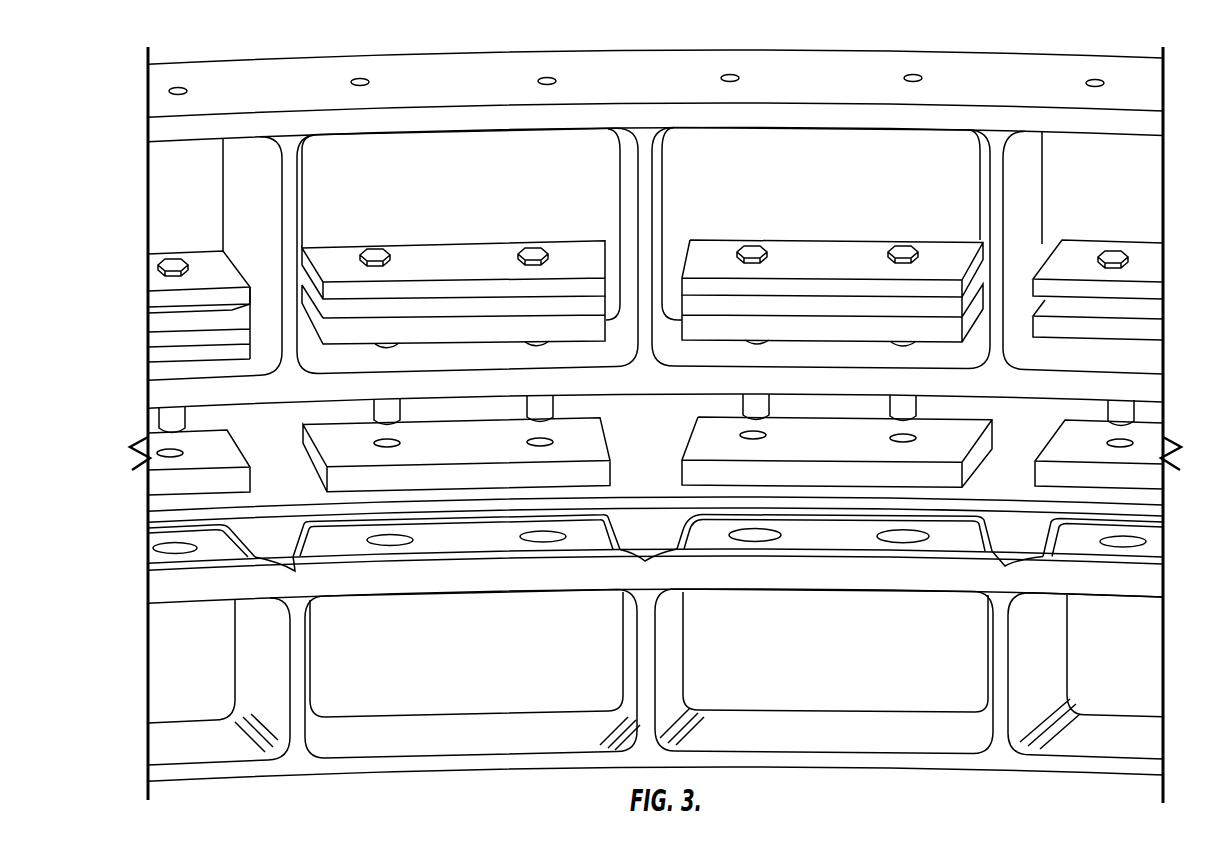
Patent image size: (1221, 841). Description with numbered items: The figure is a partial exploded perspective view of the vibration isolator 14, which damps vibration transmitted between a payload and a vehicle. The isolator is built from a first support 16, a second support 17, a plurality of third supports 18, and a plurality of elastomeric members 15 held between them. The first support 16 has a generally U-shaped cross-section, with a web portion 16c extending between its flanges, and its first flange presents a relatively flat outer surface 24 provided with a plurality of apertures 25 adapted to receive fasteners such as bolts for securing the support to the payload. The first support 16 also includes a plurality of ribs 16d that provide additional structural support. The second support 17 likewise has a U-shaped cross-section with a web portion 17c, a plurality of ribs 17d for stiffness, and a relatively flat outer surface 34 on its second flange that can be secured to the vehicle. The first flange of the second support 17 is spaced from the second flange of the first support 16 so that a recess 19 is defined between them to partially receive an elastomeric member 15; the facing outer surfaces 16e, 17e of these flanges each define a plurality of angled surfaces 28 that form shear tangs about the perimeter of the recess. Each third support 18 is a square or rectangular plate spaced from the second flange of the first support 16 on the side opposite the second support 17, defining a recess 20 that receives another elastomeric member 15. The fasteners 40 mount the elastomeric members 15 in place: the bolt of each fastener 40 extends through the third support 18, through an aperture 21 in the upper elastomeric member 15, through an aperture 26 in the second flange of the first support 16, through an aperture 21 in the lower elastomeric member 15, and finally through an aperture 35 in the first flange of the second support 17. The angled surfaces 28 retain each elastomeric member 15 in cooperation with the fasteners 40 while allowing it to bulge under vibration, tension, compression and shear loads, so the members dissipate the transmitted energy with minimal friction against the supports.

The vibration isolator 14 is at (318, 38).
The elastomeric member 15 is at (240, 340).
The first support 16 is at (790, 70).
The web portion 16c is at (538, 143).
The rib 16d is at (300, 167).
The facing outer surface 16e is at (356, 410).
The second support 17 is at (358, 768).
The web portion 17c is at (440, 673).
The rib 17d is at (298, 675).
The facing outer surface 17e is at (232, 520).
The third support 18 is at (210, 252).
The recess 19 is at (200, 414).
The recess 20 is at (203, 314).
The aperture 21 is at (176, 453).
The outer surface 24 is at (440, 72).
The aperture 25 is at (180, 86).
The aperture 26 is at (535, 352).
The angled surface 28 is at (214, 519).
The outer surface 34 is at (822, 769).
The aperture 35 is at (1147, 541).
The fastener 40 is at (172, 258).